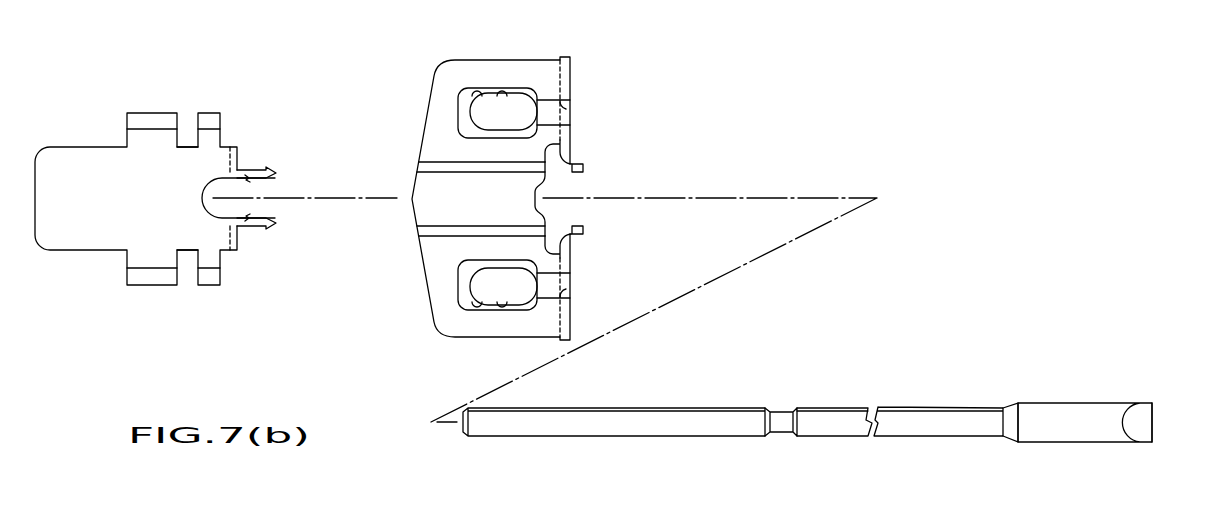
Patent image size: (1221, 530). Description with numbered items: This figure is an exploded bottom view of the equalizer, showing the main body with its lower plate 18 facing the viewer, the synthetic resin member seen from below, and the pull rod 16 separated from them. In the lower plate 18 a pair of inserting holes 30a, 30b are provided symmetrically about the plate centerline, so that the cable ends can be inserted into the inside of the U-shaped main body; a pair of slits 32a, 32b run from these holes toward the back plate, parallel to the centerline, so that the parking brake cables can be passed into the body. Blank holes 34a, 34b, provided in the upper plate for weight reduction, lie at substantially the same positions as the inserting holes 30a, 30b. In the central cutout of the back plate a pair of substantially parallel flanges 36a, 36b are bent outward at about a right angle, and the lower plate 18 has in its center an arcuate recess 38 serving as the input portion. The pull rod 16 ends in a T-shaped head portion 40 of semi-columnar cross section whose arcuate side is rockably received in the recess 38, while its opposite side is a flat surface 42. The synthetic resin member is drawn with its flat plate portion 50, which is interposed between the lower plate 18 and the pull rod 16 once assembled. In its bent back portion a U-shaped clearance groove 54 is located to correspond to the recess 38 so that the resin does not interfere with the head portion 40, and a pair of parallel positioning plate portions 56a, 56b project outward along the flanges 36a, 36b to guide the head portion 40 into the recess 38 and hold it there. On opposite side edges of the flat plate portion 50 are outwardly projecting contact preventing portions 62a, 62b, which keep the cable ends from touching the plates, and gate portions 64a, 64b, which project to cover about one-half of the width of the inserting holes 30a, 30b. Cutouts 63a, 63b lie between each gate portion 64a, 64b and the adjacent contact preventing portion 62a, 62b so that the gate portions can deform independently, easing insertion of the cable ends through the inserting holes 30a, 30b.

The pull rod 16 is at (830, 425).
The lower plate 18 is at (435, 105).
The inserting hole 30a is at (502, 93).
The inserting hole 30b is at (503, 300).
The slit 32a is at (568, 107).
The slit 32b is at (565, 290).
The blank hole 34a is at (477, 93).
The blank hole 34b is at (473, 292).
The flange 36a is at (582, 158).
The flange 36b is at (580, 240).
The recess 38 is at (548, 190).
The head portion 40 is at (1130, 422).
The flat surface 42 is at (1152, 412).
The flat plate portion 50 is at (77, 232).
The clearance groove 54 is at (215, 183).
The positioning plate portion 56a is at (253, 170).
The positioning plate portion 56b is at (256, 226).
The contact preventing portion 62a is at (210, 118).
The contact preventing portion 62b is at (212, 278).
The cutout 63a is at (192, 137).
The cutout 63b is at (193, 258).
The gate portion 64a is at (147, 120).
The gate portion 64b is at (143, 280).